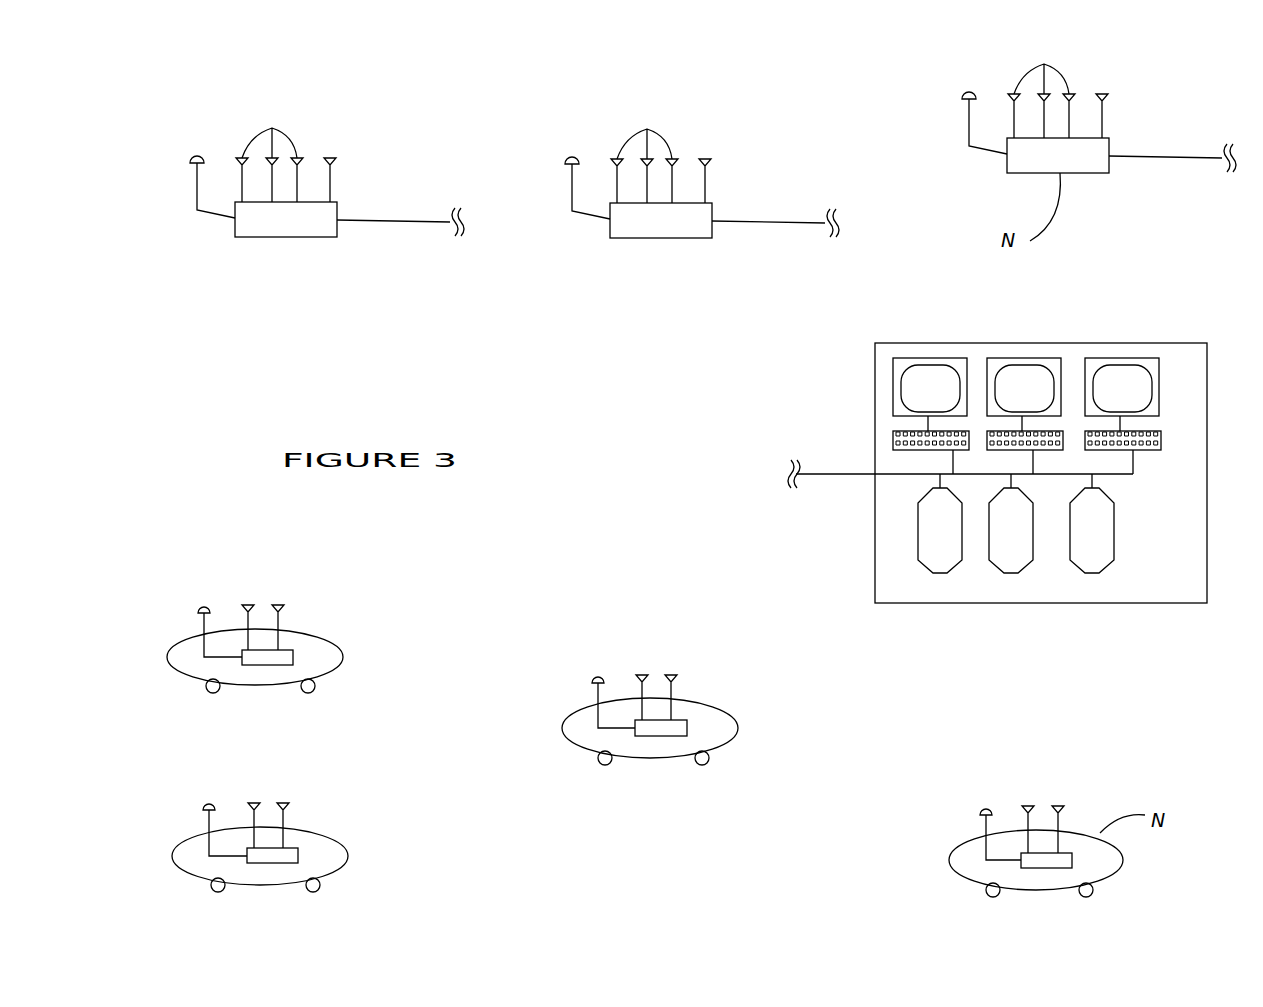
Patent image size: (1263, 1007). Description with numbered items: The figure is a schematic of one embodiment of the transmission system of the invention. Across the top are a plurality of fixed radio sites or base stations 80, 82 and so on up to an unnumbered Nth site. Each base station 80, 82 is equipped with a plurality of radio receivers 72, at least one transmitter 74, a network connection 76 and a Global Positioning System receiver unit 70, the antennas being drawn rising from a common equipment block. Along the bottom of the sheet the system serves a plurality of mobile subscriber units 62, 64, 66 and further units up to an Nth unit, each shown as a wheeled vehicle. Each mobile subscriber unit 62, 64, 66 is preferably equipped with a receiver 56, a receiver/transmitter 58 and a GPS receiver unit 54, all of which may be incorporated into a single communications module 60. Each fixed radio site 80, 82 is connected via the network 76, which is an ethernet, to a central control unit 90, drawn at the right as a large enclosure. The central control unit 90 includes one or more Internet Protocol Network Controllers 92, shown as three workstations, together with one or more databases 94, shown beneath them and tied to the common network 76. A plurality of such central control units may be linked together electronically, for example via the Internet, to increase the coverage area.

The GPS receiver unit 54 is at (200, 620).
The receiver 56 is at (246, 607).
The receiver/transmitter 58 is at (278, 606).
The communications module 60 is at (293, 657).
The mobile subscriber unit 62 is at (318, 633).
The mobile subscriber unit 64 is at (710, 702).
The mobile subscriber unit 66 is at (323, 830).
The GPS receiver unit 70 is at (196, 172).
The radio receivers 72 is at (272, 127).
The transmitter 74 is at (330, 158).
The network connection 76 is at (365, 222).
The base station 80 is at (288, 237).
The base station 82 is at (663, 238).
The central control unit 90 is at (1107, 326).
The Internet Protocol Network Controller 92 is at (940, 358).
The database 94 is at (940, 573).